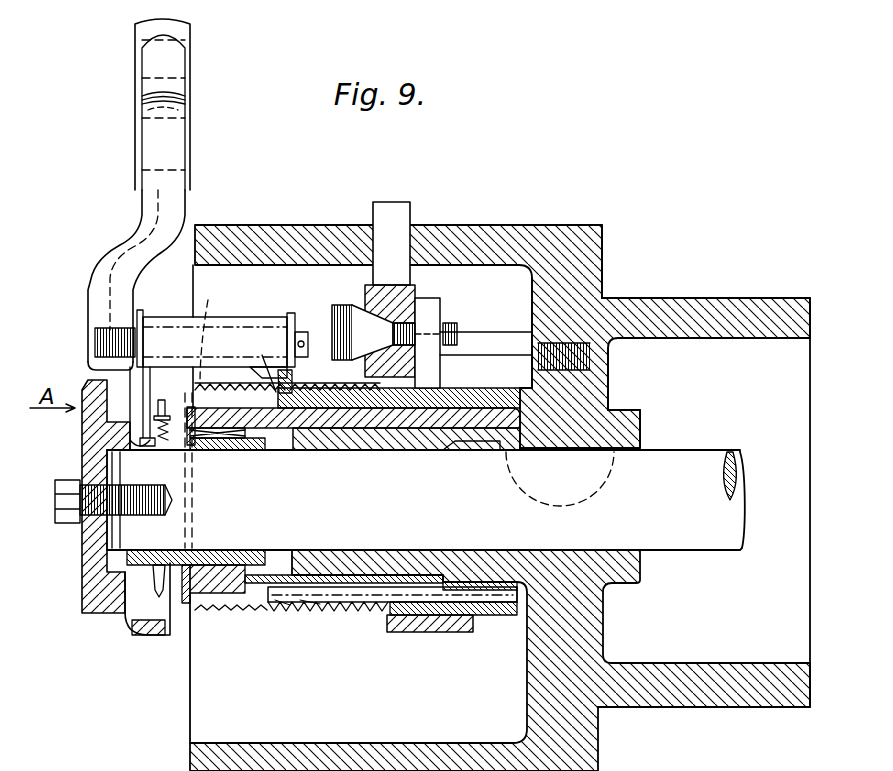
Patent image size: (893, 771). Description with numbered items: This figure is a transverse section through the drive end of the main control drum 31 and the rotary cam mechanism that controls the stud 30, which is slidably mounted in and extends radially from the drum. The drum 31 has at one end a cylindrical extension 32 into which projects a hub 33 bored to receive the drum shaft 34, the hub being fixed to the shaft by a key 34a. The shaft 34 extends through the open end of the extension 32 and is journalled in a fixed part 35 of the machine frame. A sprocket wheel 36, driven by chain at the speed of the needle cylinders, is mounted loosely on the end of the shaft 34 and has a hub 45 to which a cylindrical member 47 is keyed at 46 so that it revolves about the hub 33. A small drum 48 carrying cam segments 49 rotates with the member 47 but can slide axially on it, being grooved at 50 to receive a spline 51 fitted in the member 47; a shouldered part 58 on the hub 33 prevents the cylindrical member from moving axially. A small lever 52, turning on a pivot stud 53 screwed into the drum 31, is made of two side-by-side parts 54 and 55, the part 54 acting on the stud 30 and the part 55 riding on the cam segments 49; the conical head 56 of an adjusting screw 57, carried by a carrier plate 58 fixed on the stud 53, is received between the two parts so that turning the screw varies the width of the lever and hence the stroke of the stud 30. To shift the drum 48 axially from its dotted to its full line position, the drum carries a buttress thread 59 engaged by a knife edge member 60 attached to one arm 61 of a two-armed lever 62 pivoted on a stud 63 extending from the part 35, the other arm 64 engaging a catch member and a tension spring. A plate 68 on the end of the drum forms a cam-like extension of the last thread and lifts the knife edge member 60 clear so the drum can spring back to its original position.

The stud 30 is at (388, 224).
The main control drum 31 is at (635, 318).
The extension 32 is at (253, 238).
The hub 33 is at (560, 422).
The drum shaft 34 is at (680, 536).
The key 34a is at (527, 468).
The fixed part 35 is at (142, 214).
The sprocket wheel 36 is at (155, 567).
The hub 45 is at (258, 442).
The key 46 is at (221, 440).
The cylindrical member 47 is at (330, 412).
The small drum 48 is at (218, 650).
The cam segments 49 is at (426, 627).
The groove 50 is at (503, 600).
The spline 51 is at (273, 600).
The small lever 52 is at (367, 366).
The pivot stud 53 is at (562, 300).
The lever part 54 is at (364, 299).
The lever part 55 is at (392, 372).
The conical head 56 is at (392, 292).
The adjusting screw 57 is at (456, 330).
The carrier plate 58 is at (432, 306).
The buttress thread 59 is at (327, 610).
The knife edge member 60 is at (286, 390).
The arm 61 is at (262, 376).
The two-armed lever 62 is at (150, 313).
The stud 63 is at (97, 336).
The arm 64 is at (155, 394).
The plate 68 is at (260, 362).